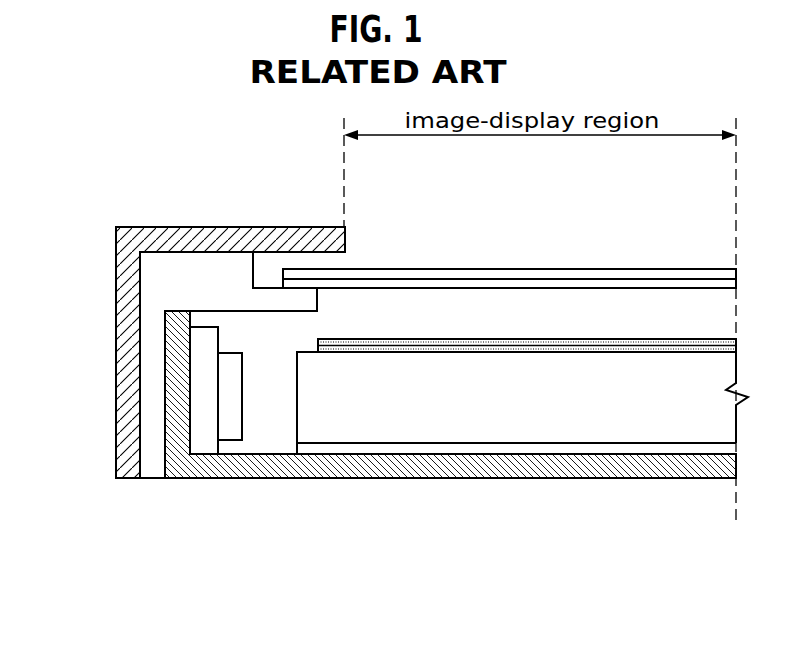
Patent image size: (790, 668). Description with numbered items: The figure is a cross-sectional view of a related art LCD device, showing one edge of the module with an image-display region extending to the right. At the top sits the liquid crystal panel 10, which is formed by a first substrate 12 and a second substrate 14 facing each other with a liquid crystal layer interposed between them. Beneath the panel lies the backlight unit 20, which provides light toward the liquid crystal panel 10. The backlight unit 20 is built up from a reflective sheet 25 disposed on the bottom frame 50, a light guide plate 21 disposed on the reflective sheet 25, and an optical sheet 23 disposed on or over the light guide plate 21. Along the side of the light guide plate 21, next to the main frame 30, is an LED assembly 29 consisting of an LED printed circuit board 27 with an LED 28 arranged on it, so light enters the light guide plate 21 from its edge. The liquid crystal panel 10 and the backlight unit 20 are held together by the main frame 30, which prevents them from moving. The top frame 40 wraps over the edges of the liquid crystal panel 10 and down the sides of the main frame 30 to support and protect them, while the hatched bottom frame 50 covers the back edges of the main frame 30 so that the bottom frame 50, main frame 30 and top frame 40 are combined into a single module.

The liquid crystal panel 10 is at (509, 219).
The first substrate 12 is at (600, 283).
The second substrate 14 is at (556, 270).
The backlight unit 20 is at (465, 487).
The light guide plate 21 is at (350, 410).
The optical sheet 23 is at (527, 463).
The reflective sheet 25 is at (424, 448).
The LED printed circuit board 27 is at (207, 418).
The LED 28 is at (230, 417).
The LED assembly 29 is at (228, 452).
The main frame 30 is at (172, 286).
The top frame 40 is at (130, 258).
The bottom frame 50 is at (583, 462).